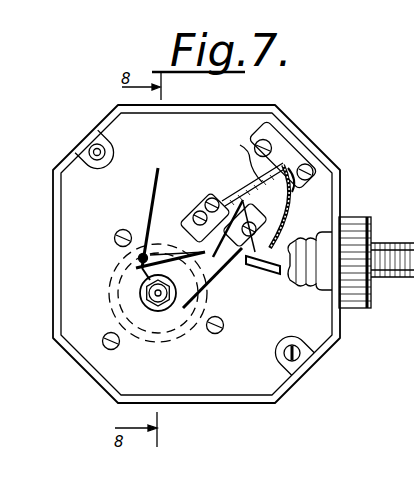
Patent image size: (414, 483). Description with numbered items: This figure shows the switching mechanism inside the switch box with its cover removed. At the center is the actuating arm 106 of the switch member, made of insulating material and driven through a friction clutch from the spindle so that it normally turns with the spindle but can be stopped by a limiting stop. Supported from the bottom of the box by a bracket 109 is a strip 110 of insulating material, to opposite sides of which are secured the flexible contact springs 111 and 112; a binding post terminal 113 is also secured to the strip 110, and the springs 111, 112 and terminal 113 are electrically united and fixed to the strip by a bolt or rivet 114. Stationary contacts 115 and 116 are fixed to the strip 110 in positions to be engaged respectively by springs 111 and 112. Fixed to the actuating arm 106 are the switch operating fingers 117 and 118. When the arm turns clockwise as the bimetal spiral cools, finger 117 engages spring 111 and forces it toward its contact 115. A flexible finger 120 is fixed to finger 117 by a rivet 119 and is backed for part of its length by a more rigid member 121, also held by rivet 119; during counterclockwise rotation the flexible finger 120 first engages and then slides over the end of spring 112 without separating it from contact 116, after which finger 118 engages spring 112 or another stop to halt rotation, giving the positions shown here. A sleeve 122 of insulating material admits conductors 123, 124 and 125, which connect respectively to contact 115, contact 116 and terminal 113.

The actuating arm 106 is at (140, 291).
The bracket 109 is at (253, 140).
The strip 110 is at (262, 190).
The flexible contact spring 111 is at (237, 159).
The flexible contact spring 112 is at (290, 186).
The binding post terminal 113 is at (318, 150).
The bolt or rivet 114 is at (272, 148).
The stationary contact 115 is at (208, 196).
The stationary contact 116 is at (213, 205).
The switch operating finger 117 is at (155, 188).
The switch operating finger 118 is at (203, 282).
The rivet 119 is at (140, 262).
The flexible finger 120 is at (172, 250).
The rigid member 121 is at (160, 252).
The sleeve 122 is at (376, 250).
The conductor 123 is at (270, 273).
The conductor 124 is at (247, 250).
The conductor 125 is at (288, 212).